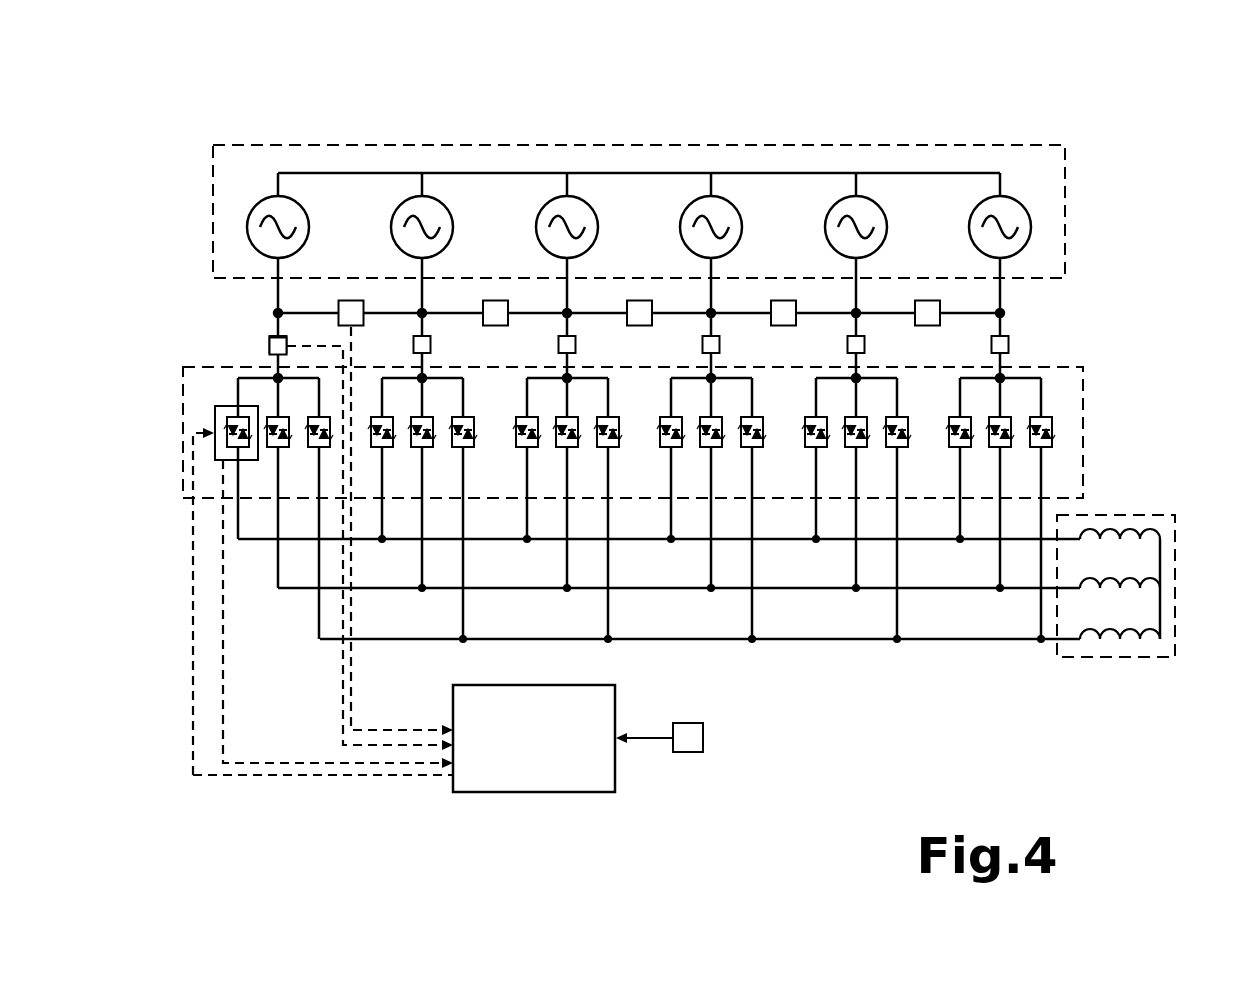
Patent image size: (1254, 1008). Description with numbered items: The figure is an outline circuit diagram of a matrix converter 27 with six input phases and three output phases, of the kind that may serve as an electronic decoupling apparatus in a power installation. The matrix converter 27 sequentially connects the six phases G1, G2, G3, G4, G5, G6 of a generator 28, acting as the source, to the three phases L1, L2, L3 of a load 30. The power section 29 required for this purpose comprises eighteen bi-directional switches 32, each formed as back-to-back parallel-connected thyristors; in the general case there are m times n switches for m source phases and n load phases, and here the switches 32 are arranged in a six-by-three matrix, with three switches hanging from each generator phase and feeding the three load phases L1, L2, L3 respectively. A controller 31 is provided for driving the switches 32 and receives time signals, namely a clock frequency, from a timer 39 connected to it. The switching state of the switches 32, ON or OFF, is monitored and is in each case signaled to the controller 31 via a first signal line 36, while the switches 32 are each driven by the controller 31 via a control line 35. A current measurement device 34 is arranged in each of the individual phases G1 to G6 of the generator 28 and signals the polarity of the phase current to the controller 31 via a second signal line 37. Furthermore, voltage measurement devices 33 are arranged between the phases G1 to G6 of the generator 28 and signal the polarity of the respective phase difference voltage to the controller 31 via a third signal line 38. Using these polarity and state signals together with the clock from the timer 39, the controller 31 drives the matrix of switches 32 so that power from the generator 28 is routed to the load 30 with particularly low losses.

The matrix converter 27 is at (1116, 343).
The generator 28 is at (698, 169).
The power section 29 is at (1083, 434).
The load 30 is at (742, 620).
The controller 31 is at (534, 738).
The bi-directional switch 32 is at (228, 406).
The voltage measurement device 33 is at (351, 300).
The current measurement device 34 is at (270, 342).
The control line 35 is at (192, 710).
The first signal line 36 is at (224, 740).
The second signal line 37 is at (343, 710).
The third signal line 38 is at (351, 660).
The timer 39 is at (690, 752).
The generator phase G1 is at (270, 203).
The generator phase G2 is at (414, 203).
The generator phase G3 is at (559, 203).
The generator phase G4 is at (703, 203).
The generator phase G5 is at (848, 203).
The generator phase G6 is at (992, 203).
The load phase L1 is at (1128, 539).
The load phase L2 is at (1128, 588).
The load phase L3 is at (1120, 640).